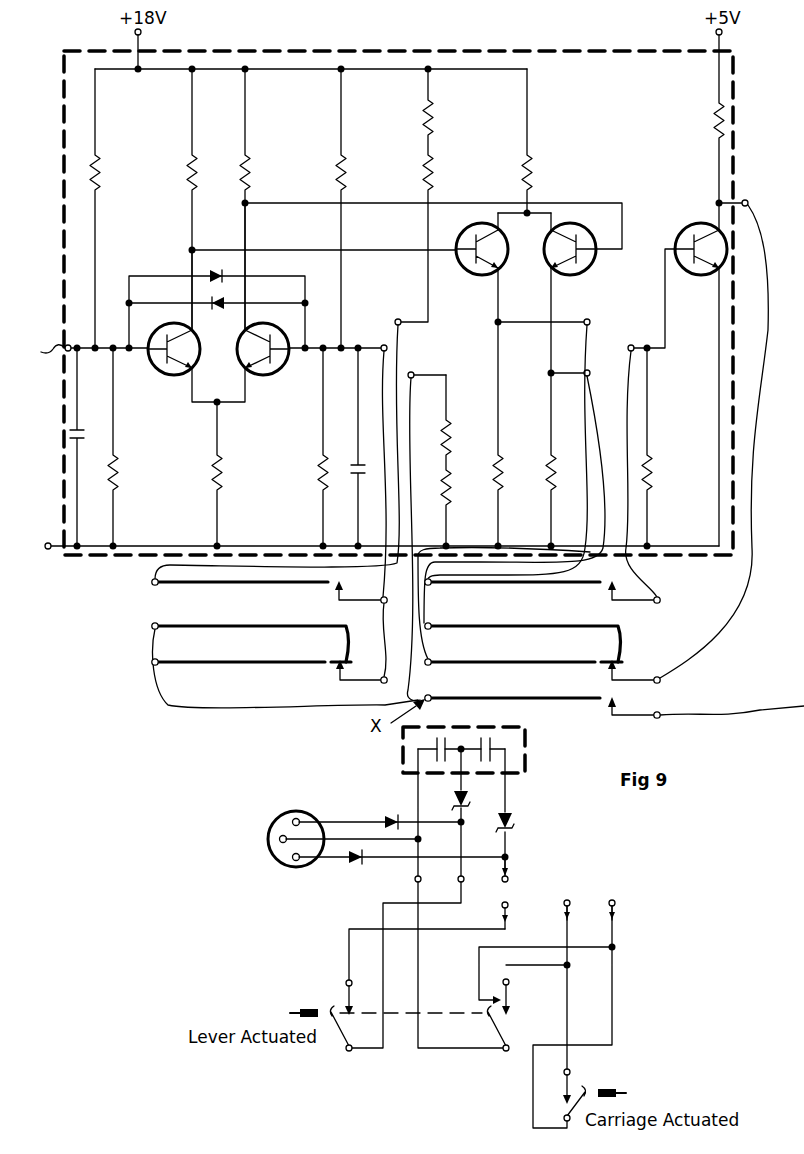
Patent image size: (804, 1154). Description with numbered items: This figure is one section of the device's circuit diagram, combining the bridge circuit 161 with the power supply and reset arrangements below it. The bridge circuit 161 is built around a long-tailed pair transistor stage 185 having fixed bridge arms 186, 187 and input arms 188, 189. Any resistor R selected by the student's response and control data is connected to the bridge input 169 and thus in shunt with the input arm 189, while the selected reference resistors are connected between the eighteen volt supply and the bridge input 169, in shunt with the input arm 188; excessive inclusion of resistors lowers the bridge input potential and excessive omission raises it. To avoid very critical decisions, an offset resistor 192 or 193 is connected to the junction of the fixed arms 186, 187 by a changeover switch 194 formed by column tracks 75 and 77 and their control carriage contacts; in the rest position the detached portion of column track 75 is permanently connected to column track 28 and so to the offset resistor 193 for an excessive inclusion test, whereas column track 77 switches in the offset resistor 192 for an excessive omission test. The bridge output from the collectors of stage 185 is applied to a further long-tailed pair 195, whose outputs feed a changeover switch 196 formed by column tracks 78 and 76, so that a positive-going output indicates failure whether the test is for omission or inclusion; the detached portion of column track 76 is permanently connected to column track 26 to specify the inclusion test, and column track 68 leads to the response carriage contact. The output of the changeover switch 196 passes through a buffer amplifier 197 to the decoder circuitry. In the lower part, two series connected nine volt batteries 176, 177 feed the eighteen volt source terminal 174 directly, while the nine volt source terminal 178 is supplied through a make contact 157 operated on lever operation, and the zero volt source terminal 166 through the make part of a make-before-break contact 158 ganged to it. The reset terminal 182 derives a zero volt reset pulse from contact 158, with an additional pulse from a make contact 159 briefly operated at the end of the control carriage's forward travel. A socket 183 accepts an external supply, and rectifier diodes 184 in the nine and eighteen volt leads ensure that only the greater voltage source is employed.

The bridge circuit 161 is at (450, 50).
The input arm 188 is at (112, 208).
The fixed bridge arm 186 is at (320, 208).
The offset resistor 192 is at (411, 195).
The buffer amplifier 197 is at (701, 206).
The bridge input 169 is at (53, 364).
The long-tailed pair transistor stage 185 is at (229, 386).
The further long-tailed pair 195 is at (535, 291).
The changeover switch 194 is at (434, 364).
The changeover switch 196 is at (632, 336).
The offset resistor 193 is at (464, 460).
The input arm 189 is at (130, 447).
The fixed bridge arm 187 is at (302, 447).
The column track 77 is at (249, 600).
The column track 28 is at (249, 642).
The column track 75 is at (249, 678).
The column track 78 is at (523, 600).
The column track 26 is at (523, 642).
The column track 76 is at (523, 678).
The column track 68 is at (523, 714).
The 9 volt battery 176 is at (426, 749).
The 9 volt battery 177 is at (500, 749).
The socket 183 is at (304, 812).
The rectifier diode 184 is at (447, 837).
The 18 volt source terminal 174 is at (506, 874).
The 9 volt source terminal 178 is at (510, 912).
The 0 volt source terminal 166 is at (574, 897).
The reset terminal 182 is at (617, 897).
The make contact 157 is at (336, 1015).
The make-before-break contact 158 is at (513, 1015).
The make contact 159 is at (579, 1095).